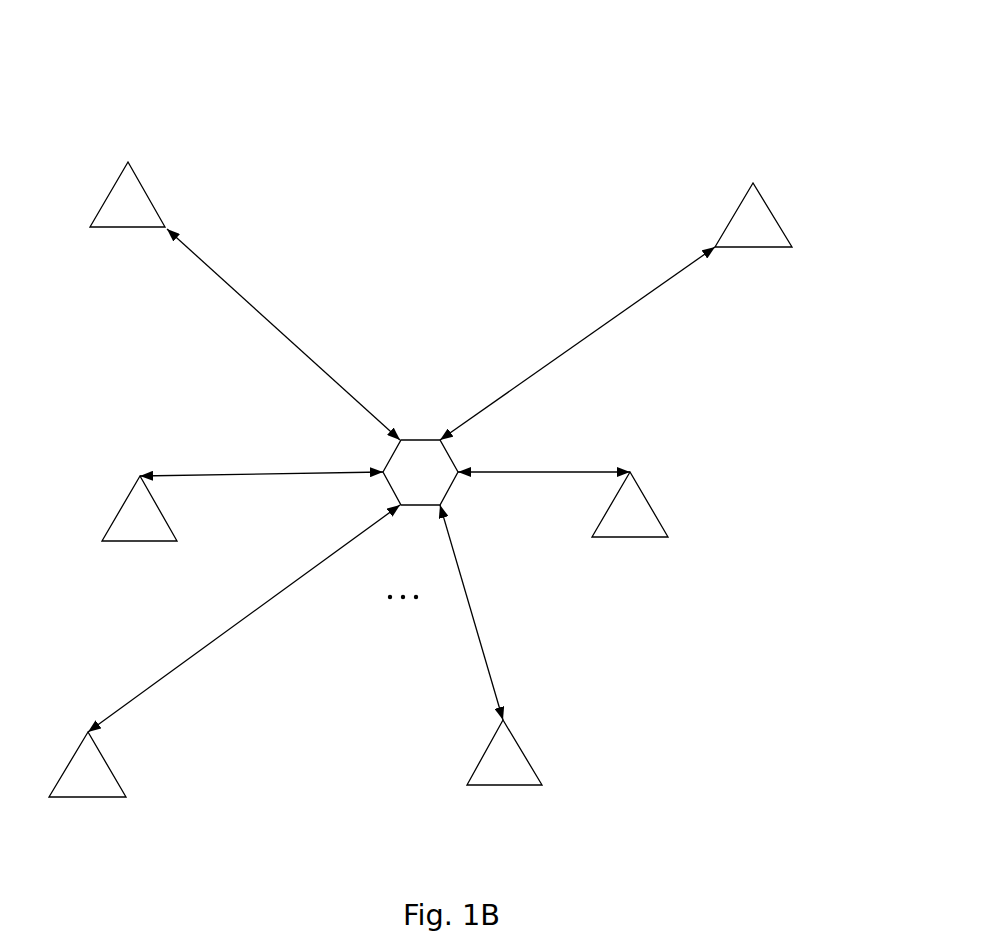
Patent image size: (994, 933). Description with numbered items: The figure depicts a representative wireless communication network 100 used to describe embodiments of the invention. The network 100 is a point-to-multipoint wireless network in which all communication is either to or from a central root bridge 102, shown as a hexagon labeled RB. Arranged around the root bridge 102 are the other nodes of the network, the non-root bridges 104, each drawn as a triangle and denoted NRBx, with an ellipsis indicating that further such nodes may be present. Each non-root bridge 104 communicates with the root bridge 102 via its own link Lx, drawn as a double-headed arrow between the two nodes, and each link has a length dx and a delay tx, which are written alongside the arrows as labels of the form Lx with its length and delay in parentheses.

The wireless communication network 100 is at (663, 44).
The root bridge 102 is at (410, 443).
The non-root bridge 104 is at (141, 183).